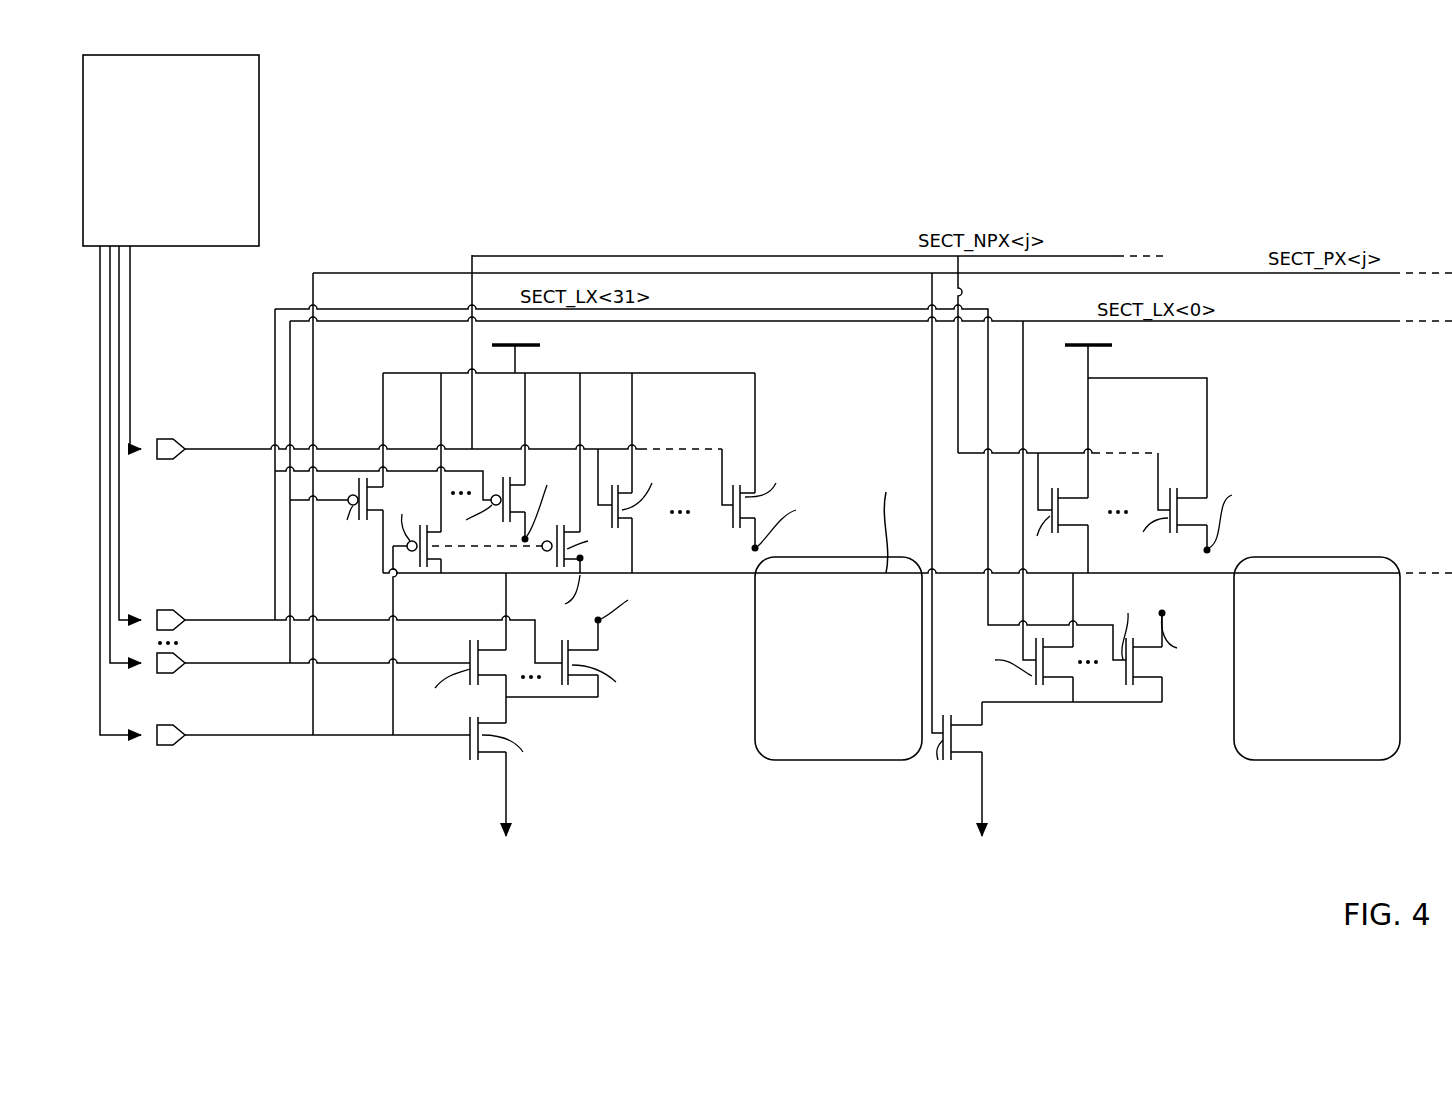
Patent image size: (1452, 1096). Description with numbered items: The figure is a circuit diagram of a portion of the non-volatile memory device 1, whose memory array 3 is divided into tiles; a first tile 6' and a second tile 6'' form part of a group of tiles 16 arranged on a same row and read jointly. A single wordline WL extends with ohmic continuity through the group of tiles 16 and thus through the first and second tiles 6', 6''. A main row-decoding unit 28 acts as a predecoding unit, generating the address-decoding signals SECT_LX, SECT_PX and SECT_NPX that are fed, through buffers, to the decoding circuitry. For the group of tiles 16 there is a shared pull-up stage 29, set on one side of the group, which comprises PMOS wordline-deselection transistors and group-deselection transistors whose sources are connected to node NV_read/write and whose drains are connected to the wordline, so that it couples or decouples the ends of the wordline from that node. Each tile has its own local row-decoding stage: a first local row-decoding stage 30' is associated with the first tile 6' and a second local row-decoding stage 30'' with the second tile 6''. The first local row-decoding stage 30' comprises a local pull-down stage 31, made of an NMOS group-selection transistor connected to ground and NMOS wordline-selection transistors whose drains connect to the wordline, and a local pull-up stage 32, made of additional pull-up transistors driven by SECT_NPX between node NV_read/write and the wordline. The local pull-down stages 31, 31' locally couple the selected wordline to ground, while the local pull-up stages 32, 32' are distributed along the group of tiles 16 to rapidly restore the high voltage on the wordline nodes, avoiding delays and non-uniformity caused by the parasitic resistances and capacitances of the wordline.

The non-volatile memory device 1 is at (1248, 162).
The memory array 3 is at (1341, 715).
The first tile 6' is at (816, 658).
The second tile 6'' is at (1341, 658).
The group of tiles 16 is at (812, 795).
The main row-decoding unit 28 is at (250, 125).
The shared pull-up stage 29 is at (360, 425).
The first local row-decoding stage 30' is at (548, 776).
The second local row-decoding stage 30'' is at (1023, 774).
The local pull-down stage 31 is at (552, 688).
The local pull-down stage 31' is at (1094, 698).
The local pull-up stage 32 is at (582, 437).
The local pull-up stage 32' is at (1120, 456).